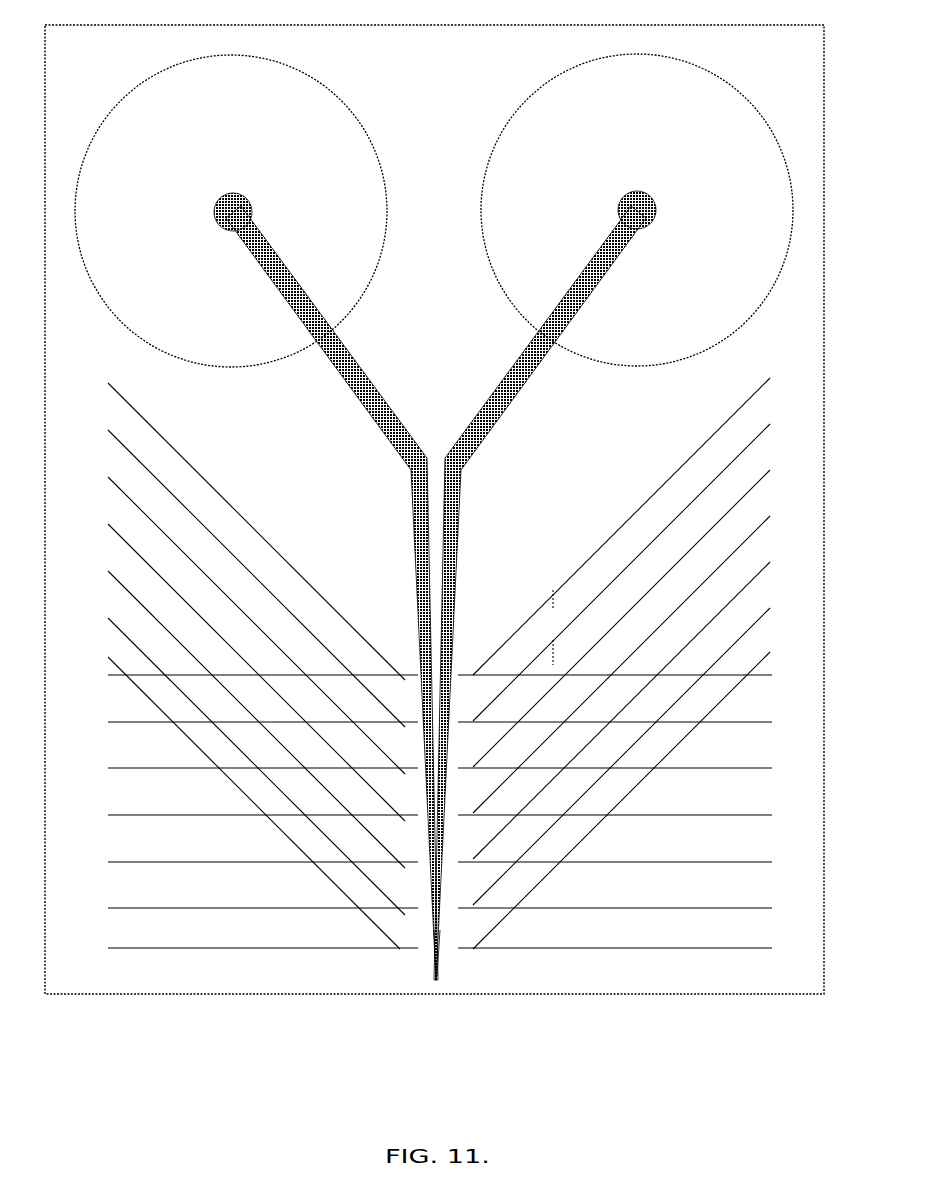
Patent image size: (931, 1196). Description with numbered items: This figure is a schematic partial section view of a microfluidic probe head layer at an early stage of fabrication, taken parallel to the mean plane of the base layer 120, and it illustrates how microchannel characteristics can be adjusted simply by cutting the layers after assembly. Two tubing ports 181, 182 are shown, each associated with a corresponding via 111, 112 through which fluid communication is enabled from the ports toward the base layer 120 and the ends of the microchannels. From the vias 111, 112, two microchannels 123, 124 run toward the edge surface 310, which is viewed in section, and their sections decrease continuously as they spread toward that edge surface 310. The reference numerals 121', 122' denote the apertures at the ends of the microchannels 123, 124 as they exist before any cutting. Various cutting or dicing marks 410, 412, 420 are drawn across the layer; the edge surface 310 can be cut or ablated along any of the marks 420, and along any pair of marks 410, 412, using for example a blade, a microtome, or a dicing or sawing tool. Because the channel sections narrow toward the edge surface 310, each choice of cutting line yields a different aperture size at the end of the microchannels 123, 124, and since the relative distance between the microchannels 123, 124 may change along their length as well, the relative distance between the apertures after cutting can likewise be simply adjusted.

The edge surface 310 is at (187, 1023).
The tubing port 181 is at (253, 80).
The tubing port 182 is at (505, 152).
The via 111 is at (213, 240).
The via 112 is at (645, 252).
The microchannel 123 is at (405, 518).
The microchannel 124 is at (462, 535).
The aperture as of before cutting 121' is at (376, 998).
The aperture as of before cutting 122' is at (483, 1005).
The cutting/dicing mark 412 is at (350, 645).
The cutting/dicing mark 410 is at (602, 572).
The base layer 120 is at (417, 800).
The cutting/dicing mark 420 is at (590, 968).